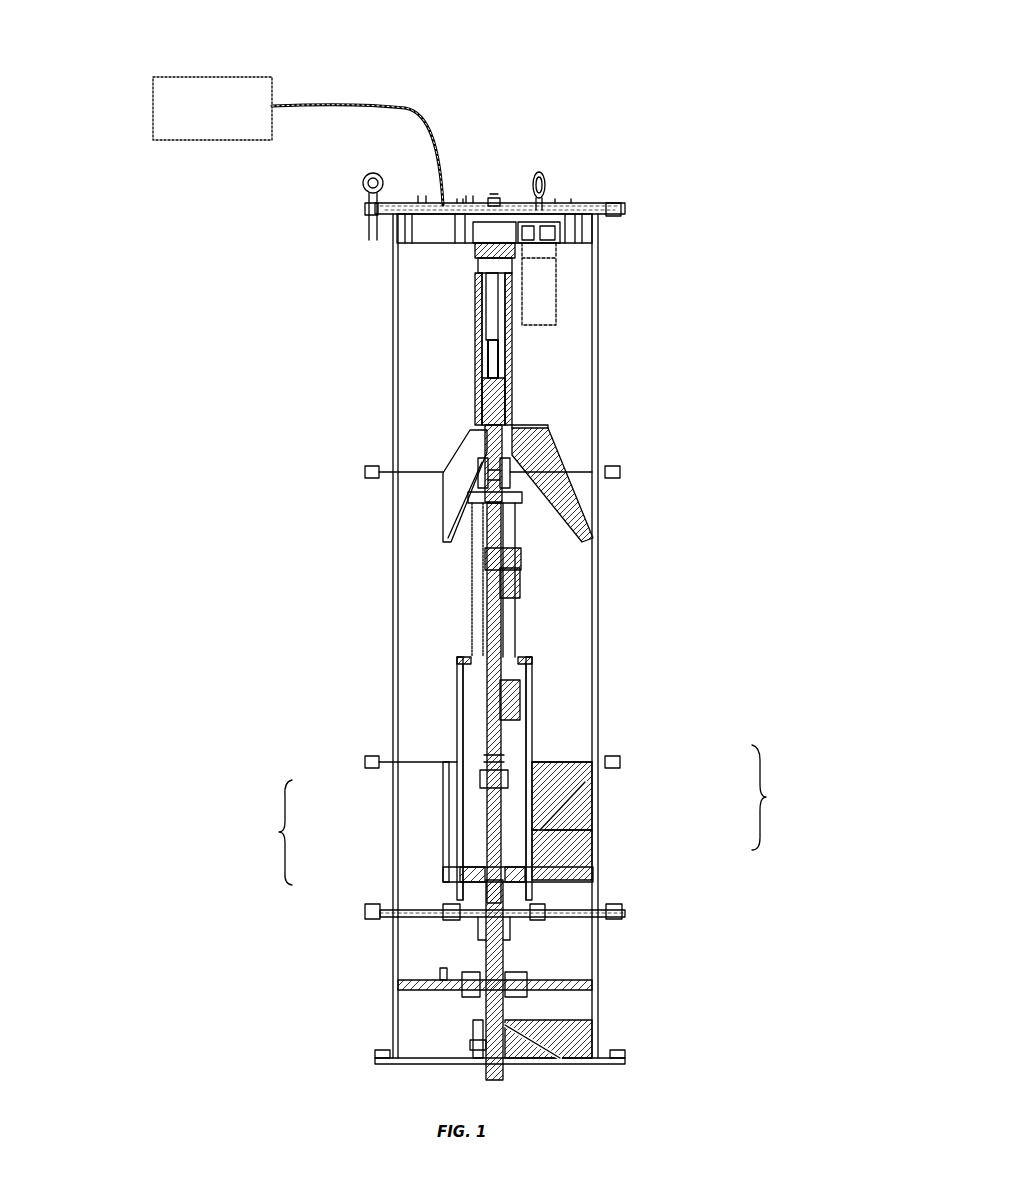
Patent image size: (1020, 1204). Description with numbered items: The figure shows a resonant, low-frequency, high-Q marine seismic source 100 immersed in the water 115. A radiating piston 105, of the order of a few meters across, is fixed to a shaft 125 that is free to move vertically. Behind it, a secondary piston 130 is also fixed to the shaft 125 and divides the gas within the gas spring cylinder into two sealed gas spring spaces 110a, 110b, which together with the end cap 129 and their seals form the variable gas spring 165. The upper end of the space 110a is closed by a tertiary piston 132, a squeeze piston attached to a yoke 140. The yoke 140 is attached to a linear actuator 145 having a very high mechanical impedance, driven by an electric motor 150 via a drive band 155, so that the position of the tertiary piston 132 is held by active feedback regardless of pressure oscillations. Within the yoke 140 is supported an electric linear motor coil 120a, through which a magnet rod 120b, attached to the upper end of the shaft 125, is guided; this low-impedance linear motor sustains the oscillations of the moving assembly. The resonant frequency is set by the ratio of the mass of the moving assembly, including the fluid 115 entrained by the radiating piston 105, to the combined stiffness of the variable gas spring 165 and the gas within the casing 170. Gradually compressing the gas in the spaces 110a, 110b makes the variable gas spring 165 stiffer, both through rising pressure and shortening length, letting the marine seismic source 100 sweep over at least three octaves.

The marine seismic source 100 is at (122, 22).
The radiating piston 105 is at (520, 978).
The gas spring space 110a is at (520, 848).
The gas spring space 110b is at (522, 900).
The fluid 115 is at (161, 364).
The electric linear motor coil 120a is at (478, 620).
The magnet rod 120b is at (522, 590).
The shaft 125 is at (505, 1018).
The end cap 129 is at (460, 917).
The secondary piston 130 is at (470, 874).
The tertiary piston 132 is at (458, 824).
The yoke 140 is at (470, 652).
The linear actuator 145 is at (508, 362).
The electric motor 150 is at (556, 290).
The drive band 155 is at (494, 206).
The variable gas spring 165 is at (525, 815).
The casing 170 is at (396, 350).